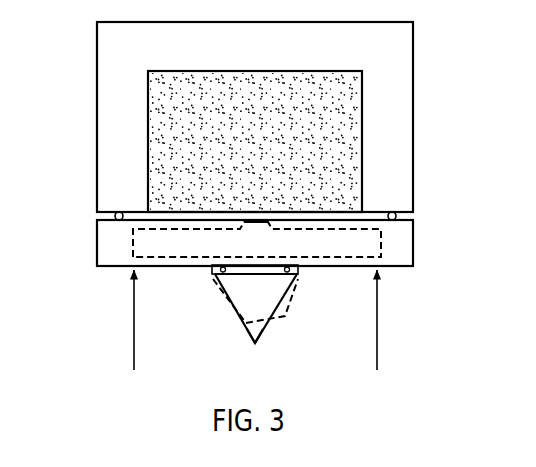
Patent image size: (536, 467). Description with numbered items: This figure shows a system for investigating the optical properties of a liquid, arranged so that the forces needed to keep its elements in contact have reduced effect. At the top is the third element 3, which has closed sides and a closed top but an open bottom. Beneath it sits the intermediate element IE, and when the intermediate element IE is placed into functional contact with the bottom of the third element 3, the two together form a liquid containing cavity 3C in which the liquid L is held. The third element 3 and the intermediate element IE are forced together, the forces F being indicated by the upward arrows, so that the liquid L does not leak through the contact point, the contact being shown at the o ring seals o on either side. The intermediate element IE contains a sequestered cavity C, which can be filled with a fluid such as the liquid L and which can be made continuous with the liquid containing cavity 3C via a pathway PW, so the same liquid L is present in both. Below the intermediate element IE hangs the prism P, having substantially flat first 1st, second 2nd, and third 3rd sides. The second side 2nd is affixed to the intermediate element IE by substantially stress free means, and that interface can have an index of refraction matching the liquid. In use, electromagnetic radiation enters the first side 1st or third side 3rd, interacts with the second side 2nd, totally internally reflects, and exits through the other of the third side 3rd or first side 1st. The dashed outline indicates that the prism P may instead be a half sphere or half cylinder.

The third element 3 is at (262, 58).
The liquid containing cavity 3C is at (211, 104).
The liquid L is at (259, 151).
The cavity C is at (261, 252).
The pathway PW is at (260, 218).
The o-ring seal o is at (116, 213).
The intermediate element IE is at (419, 243).
The prism P is at (296, 328).
The first side 1st is at (238, 326).
The second side 2nd is at (271, 279).
The third side 3rd is at (266, 343).
The applied force F is at (254, 333).